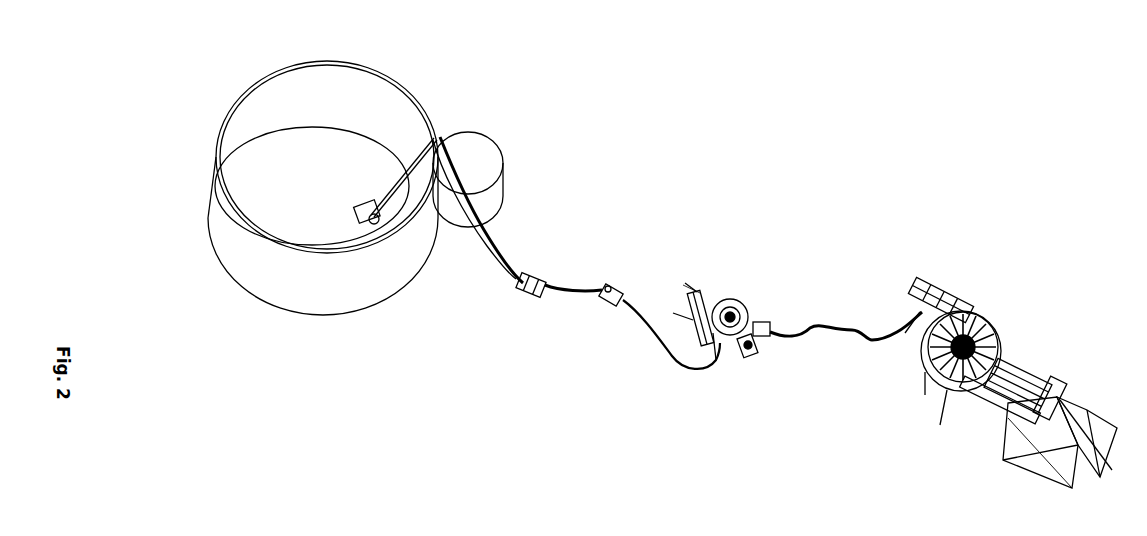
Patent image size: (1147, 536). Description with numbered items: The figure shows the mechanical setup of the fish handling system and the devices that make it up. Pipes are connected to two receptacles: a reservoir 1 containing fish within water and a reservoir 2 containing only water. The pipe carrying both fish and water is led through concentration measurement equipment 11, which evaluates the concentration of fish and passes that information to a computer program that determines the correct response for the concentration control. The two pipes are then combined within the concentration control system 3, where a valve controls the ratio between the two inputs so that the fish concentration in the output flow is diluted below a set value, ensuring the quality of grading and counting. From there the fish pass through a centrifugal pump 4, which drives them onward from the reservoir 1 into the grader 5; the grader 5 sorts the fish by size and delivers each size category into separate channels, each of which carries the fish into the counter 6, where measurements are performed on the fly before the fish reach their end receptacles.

The reservoir containing living organisms in fluid 1 is at (402, 83).
The reservoir containing fluid only 2 is at (492, 140).
The concentration measurement equipment 11 is at (555, 268).
The concentration control system 3 is at (618, 288).
The centrifugal pump 4 is at (733, 308).
The grader 5 is at (950, 317).
The counter 6 is at (1053, 397).